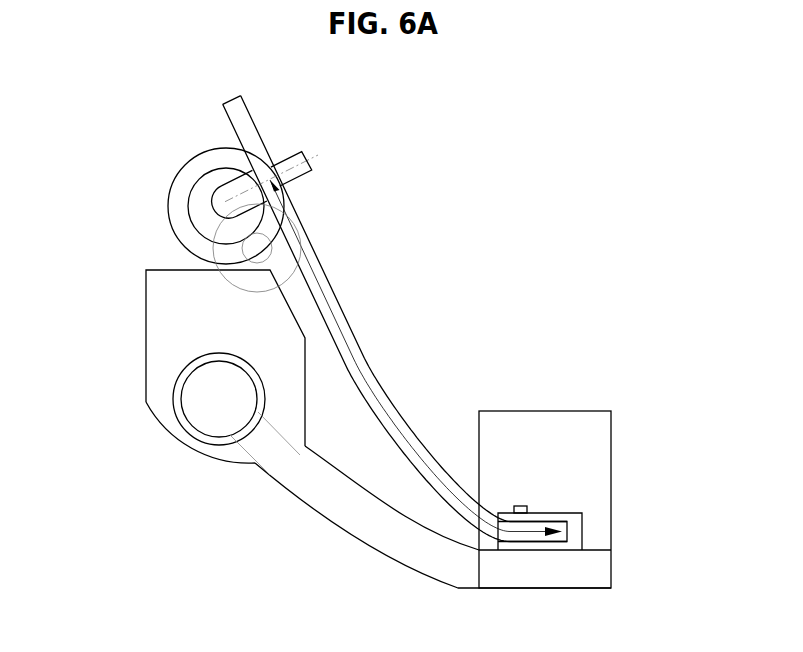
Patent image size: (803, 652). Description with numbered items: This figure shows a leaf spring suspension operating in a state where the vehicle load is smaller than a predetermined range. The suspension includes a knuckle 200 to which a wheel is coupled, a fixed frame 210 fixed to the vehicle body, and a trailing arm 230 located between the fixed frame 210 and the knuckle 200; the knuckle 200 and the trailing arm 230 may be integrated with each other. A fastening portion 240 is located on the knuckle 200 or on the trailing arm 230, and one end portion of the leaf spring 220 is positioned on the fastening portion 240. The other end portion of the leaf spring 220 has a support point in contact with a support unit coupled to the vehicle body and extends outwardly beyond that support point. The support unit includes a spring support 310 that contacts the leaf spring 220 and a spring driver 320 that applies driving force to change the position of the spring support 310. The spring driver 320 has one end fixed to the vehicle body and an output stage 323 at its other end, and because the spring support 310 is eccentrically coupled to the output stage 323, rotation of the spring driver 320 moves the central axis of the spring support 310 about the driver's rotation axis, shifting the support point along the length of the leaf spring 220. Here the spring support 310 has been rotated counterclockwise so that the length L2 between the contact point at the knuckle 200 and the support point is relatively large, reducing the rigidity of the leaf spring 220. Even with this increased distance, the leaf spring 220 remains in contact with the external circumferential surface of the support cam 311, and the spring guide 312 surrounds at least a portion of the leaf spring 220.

The knuckle 200 is at (568, 411).
The fixed frame 210 is at (165, 427).
The leaf spring 220 is at (372, 375).
The trailing arm 230 is at (295, 490).
The fastening portion 240 is at (575, 533).
The spring support 310 is at (184, 150).
The support cam 311 is at (185, 191).
The spring guide 312 is at (287, 147).
The spring driver 320 is at (232, 302).
The output stage 323 is at (238, 276).
The length L2 is at (322, 292).